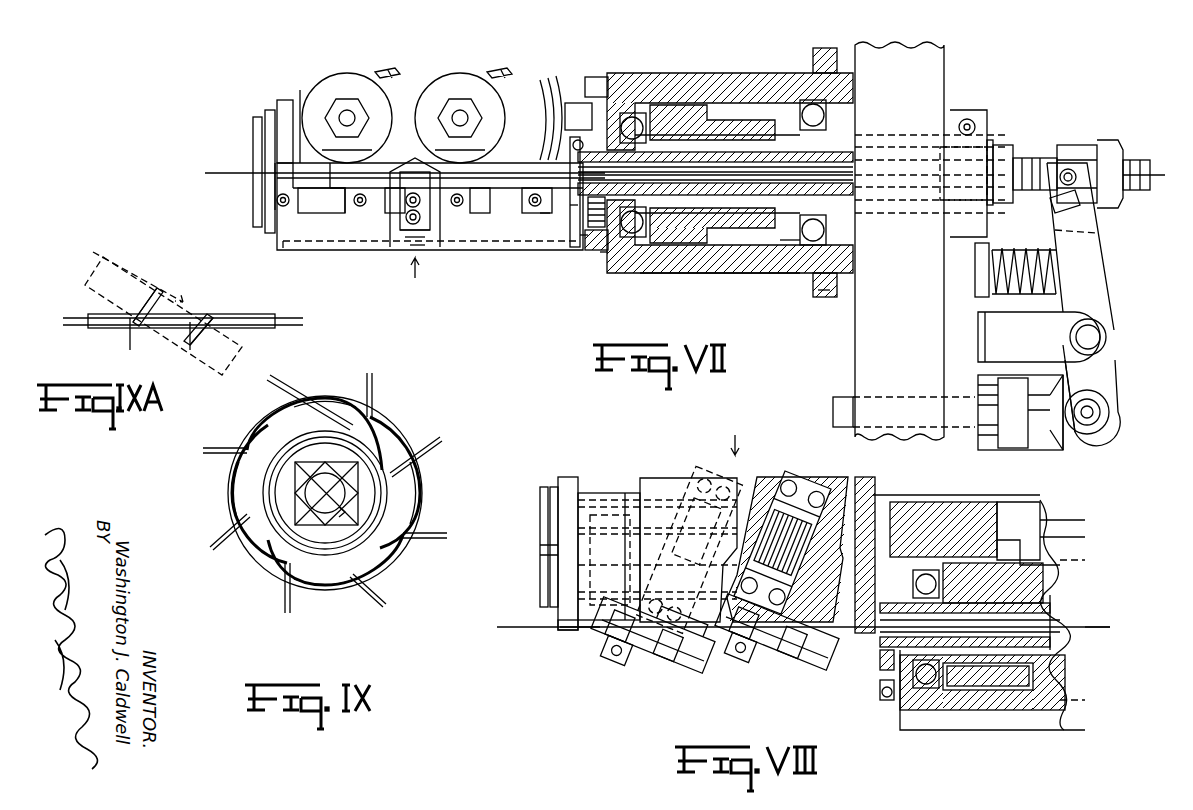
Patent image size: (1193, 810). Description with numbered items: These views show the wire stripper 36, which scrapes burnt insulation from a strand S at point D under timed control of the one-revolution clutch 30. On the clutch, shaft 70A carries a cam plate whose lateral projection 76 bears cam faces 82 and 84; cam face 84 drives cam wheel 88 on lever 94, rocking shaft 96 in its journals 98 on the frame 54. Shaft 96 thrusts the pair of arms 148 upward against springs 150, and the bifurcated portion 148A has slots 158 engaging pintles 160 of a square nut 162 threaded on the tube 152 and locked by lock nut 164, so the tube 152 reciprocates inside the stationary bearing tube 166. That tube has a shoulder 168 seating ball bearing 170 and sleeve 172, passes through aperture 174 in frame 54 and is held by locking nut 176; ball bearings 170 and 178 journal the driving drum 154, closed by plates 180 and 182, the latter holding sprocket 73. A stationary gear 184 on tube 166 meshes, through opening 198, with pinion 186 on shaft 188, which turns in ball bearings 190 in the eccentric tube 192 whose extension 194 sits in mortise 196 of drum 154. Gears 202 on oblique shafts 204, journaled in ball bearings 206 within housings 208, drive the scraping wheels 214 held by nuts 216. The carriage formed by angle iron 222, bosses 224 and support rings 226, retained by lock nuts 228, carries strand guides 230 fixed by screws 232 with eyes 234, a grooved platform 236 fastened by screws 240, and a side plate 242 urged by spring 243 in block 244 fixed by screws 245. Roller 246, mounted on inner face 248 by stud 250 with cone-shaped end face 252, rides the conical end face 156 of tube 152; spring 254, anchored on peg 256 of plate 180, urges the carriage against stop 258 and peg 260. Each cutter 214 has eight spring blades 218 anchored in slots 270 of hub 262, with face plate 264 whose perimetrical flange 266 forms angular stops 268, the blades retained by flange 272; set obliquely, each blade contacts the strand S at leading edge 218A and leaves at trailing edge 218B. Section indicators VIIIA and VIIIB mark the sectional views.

In FIG. 7, the one-revolution clutch 30 is at (1076, 448).
In FIG. 7, the wire insulation scraping device 36 is at (754, 282).
In FIG. 7, the housing 54 is at (855, 310).
In FIG. 7, the shaft 70A is at (843, 397).
In FIG. 7, the sprocket 73 is at (820, 297).
In FIG. 7, the lateral projection 76 is at (1015, 450).
In FIG. 7, the upwardly extending cam face 82 is at (1035, 445).
In FIG. 7, the forwardly extending cam face 84 is at (1068, 438).
In FIG. 7, the cam wheel 88 is at (1105, 410).
In FIG. 7, the lever 94 is at (1102, 377).
In FIG. 7, the shaft 96 is at (1101, 335).
In FIG. 7, the journals 98 is at (1039, 337).
In FIG. 7, the arms 148 is at (1100, 265).
In FIG. 7, the bifurcated portion 148A is at (1097, 207).
In FIG. 7, the springs 150 is at (1028, 294).
In FIG. 7, the tube 152 is at (1012, 157).
In FIG. 8, the tube 152 is at (1053, 604).
In FIG. 7, the driving drum 154 is at (696, 273).
In FIG. 8, the driving drum 154 is at (1060, 725).
In FIG. 7, the conical end face 156 is at (542, 215).
In FIG. 8, the conical end face 156 is at (882, 660).
In FIG. 7, the slots 158 is at (1062, 197).
In FIG. 7, the pintles 160 is at (1067, 170).
In FIG. 7, the square nut 162 is at (1080, 148).
In FIG. 7, the lock nut 164 is at (1110, 141).
In FIG. 7, the stationary bearing tube 166 is at (780, 242).
In FIG. 8, the stationary bearing tube 166 is at (1053, 597).
In FIG. 7, the external shoulder 168 is at (775, 115).
In FIG. 7, the ball bearing 170 is at (854, 245).
In FIG. 7, the sleeve 172 is at (855, 113).
In FIG. 7, the aperture 174 is at (905, 135).
In FIG. 7, the locking nut 176 is at (962, 114).
In FIG. 7, the ball bearing 178 is at (634, 123).
In FIG. 8, the ball bearing 178 is at (930, 693).
In FIG. 7, the flat plate 180 is at (610, 73).
In FIG. 8, the flat plate 180 is at (910, 723).
In FIG. 7, the flat plate 182 is at (852, 53).
In FIG. 7, the gear 184 is at (680, 120).
In FIG. 8, the gear 184 is at (978, 695).
In FIG. 8, the pinion 186 is at (985, 532).
In FIG. 8, the shaft 188 is at (920, 517).
In FIG. 8, the ball bearings 190 is at (628, 483).
In FIG. 7, the eccentric cylindrical tube 192 is at (307, 90).
In FIG. 8, the eccentric cylindrical tube 192 is at (623, 493).
In FIG. 8, the extension 194 is at (1075, 523).
In FIG. 8, the mortise 196 is at (1075, 546).
In FIG. 8, the opening 198 is at (1002, 560).
In FIG. 8, the gears 202 is at (765, 500).
In FIG. 7, the oblique shafts 204 is at (350, 128).
In FIG. 8, the oblique shafts 204 is at (652, 670).
In FIG. 8, the ball bearings 206 is at (690, 500).
In FIG. 8, the hollow oblique housings 208 is at (655, 488).
In FIG. 7, the insulation-scraping wheels 214 is at (340, 75).
In FIG. 8, the insulation-scraping wheels 214 is at (680, 680).
In FIG. 9, the insulation-scraping wheels 214 is at (410, 403).
In FIG. 9A, the insulation-scraping wheels 214 is at (100, 258).
In FIG. 7, the nuts 216 is at (328, 115).
In FIG. 8, the nuts 216 is at (622, 667).
In FIG. 7, the spring blades 218 is at (383, 62).
In FIG. 8, the spring blades 218 is at (706, 655).
In FIG. 9, the spring blades 218 is at (272, 382).
In FIG. 9A, the spring blades 218 is at (135, 285).
In FIG. 9A, the leading edge 218A is at (190, 350).
In FIG. 9A, the trailing edge 218B is at (155, 290).
In FIG. 7, the angle iron 222 is at (310, 250).
In FIG. 7, the angular bosses 224 is at (270, 246).
In FIG. 8, the angular bosses 224 is at (563, 609).
In FIG. 7, the support rings 226 is at (286, 100).
In FIG. 8, the support rings 226 is at (560, 477).
In FIG. 7, the lock nuts 228 is at (258, 110).
In FIG. 8, the lock nuts 228 is at (545, 505).
In FIG. 7, the strand guides 230 is at (255, 200).
In FIG. 8, the strand guides 230 is at (570, 635).
In FIG. 7, the screws 232 is at (268, 210).
In FIG. 7, the eyes 234 is at (275, 190).
In FIG. 7, the platform 236 is at (333, 190).
In FIG. 9A, the platform 236 is at (117, 330).
In FIG. 7, the screws 240 is at (356, 204).
In FIG. 7, the raised side plate 242 is at (403, 225).
In FIG. 7, the spring 243 is at (425, 247).
In FIG. 7, the block 244 is at (425, 237).
In FIG. 7, the screws 245 is at (400, 213).
In FIG. 7, the actuating roller element 246 is at (575, 212).
In FIG. 7, the inner face 248 is at (602, 255).
In FIG. 7, the stud 250 is at (585, 238).
In FIG. 7, the cone-shaped end face 252 is at (580, 200).
In FIG. 7, the spring 254 is at (588, 232).
In FIG. 8, the spring 254 is at (880, 690).
In FIG. 7, the peg 256 is at (604, 252).
In FIG. 8, the peg 256 is at (895, 700).
In FIG. 7, the stop 258 is at (602, 78).
In FIG. 7, the peg 260 is at (577, 56).
In FIG. 9, the hub 262 is at (423, 512).
In FIG. 9, the face plate 264 is at (352, 380).
In FIG. 9, the perimetrical flange 266 is at (312, 396).
In FIG. 9, the angular stops 268 is at (373, 398).
In FIG. 9, the slots 270 is at (390, 465).
In FIG. 8, the flange 272 is at (620, 633).
In FIG. 7, the point D is at (412, 274).
In FIG. 8, the point D is at (735, 435).
In FIG. 7, the strand S is at (222, 172).
In FIG. 8, the strand S is at (510, 637).
In FIG. 9A, the strand S is at (74, 312).
In FIG. 8, the section line VIIIA is at (830, 478).
In FIG. 8, the section line VIIIB is at (515, 480).